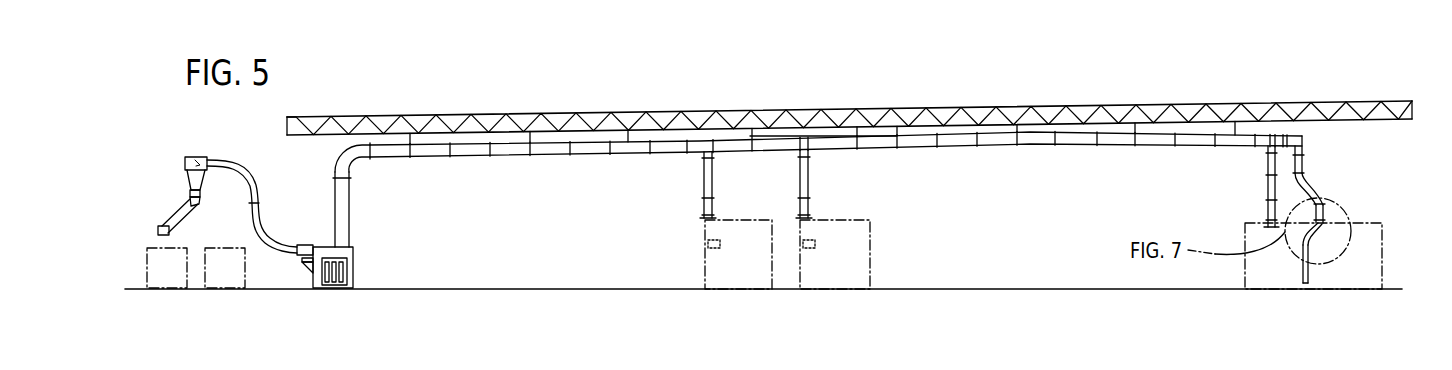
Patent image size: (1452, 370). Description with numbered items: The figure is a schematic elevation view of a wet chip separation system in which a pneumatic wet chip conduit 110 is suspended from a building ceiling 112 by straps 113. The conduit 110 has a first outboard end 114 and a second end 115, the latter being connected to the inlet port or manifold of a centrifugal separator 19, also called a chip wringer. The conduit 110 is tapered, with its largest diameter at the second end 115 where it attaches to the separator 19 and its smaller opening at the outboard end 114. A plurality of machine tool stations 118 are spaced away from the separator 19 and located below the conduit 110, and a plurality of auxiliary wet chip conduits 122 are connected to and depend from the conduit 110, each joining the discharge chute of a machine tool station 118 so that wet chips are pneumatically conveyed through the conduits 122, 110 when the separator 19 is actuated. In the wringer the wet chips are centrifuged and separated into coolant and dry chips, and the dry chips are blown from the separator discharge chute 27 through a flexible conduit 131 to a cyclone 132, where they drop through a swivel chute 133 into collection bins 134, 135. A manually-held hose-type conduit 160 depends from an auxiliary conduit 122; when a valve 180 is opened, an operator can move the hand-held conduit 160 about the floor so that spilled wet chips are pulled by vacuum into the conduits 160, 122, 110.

The centrifugal separator 19 is at (353, 277).
The separator discharge chute 27 is at (303, 247).
The wet chip conduit 110 is at (597, 157).
The building ceiling 112 is at (584, 113).
The straps 113 is at (410, 139).
The first outboard end 114 is at (1303, 138).
The second end 115 is at (344, 245).
The machine tool stations 118 is at (870, 270).
The auxiliary wet chip conduits 122 is at (712, 180).
The flexible conduit 131 is at (257, 188).
The cyclone 132 is at (213, 155).
The swivel chute 133 is at (168, 212).
The collection bin 134 is at (245, 264).
The collection bin 135 is at (197, 207).
The manually-held hose-type conduit 160 is at (1304, 278).
The valve 180 is at (1300, 220).